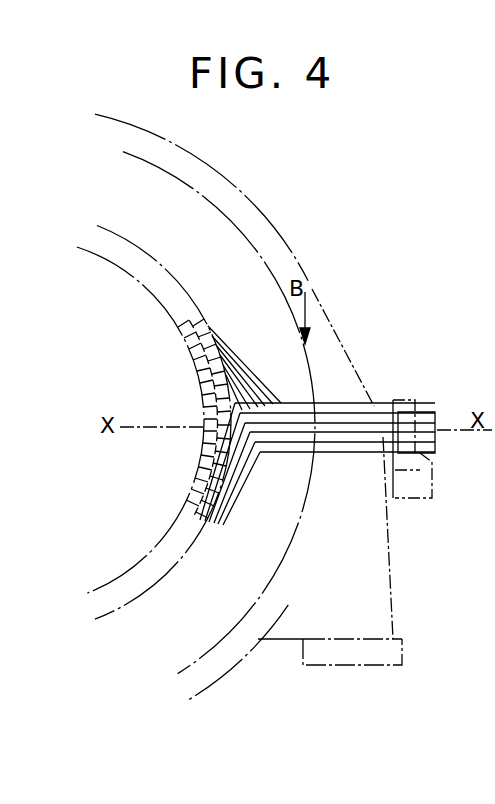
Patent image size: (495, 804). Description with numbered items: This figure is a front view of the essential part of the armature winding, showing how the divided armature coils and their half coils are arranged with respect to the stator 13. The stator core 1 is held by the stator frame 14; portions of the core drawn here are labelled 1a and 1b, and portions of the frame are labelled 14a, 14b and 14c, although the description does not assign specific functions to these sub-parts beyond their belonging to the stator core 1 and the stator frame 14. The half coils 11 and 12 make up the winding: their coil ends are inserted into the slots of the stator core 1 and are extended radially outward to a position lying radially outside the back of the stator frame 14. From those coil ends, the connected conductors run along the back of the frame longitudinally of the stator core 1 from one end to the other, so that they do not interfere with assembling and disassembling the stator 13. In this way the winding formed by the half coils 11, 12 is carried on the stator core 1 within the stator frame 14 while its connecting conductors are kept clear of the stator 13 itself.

The stator core 1 is at (160, 297).
The stator core laminations / yoke 1a is at (204, 430).
The slot portion of stator core 1b is at (197, 357).
The half coil 11 is at (240, 465).
The half coil 12 is at (270, 390).
The stator 13 is at (163, 216).
The stator frame 14 is at (268, 216).
The cover side wall 14a is at (323, 309).
The cover support leg 14b is at (389, 540).
The cover flange 14c is at (296, 538).